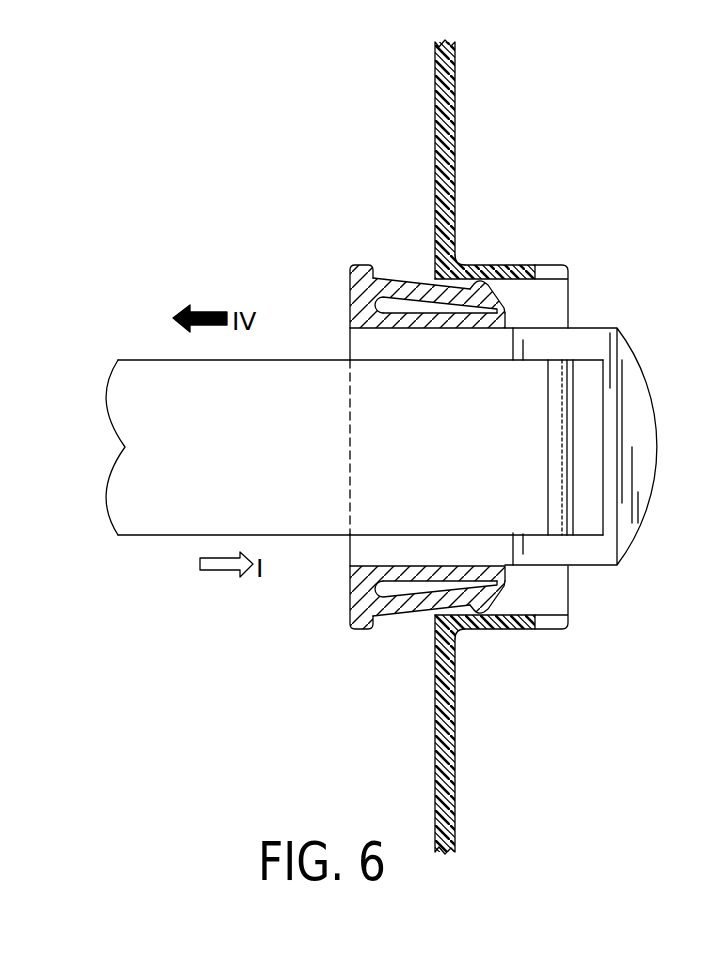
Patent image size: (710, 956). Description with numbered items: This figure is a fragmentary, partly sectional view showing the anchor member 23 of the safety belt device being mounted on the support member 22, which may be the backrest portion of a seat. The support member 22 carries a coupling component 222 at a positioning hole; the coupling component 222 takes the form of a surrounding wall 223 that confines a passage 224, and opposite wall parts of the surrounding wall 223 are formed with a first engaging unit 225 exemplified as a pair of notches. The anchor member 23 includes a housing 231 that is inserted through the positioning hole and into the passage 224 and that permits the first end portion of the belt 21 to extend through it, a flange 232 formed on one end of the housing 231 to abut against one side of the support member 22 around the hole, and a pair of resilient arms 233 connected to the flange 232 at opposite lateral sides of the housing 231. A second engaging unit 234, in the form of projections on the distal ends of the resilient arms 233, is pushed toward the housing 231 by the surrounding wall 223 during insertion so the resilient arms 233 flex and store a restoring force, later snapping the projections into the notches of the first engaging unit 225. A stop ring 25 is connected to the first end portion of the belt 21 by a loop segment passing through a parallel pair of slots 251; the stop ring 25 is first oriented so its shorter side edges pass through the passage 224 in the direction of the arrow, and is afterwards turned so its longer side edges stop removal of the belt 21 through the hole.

The belt 21 is at (155, 380).
The support member 22 is at (522, 447).
The coupling component 222 is at (499, 258).
The surrounding wall 223 is at (470, 266).
The passage 224 is at (522, 594).
The first engaging unit 225 is at (560, 268).
The anchor member 23 is at (422, 421).
The housing 231 is at (415, 575).
The flange 232 is at (352, 603).
The resilient arms 233 is at (418, 290).
The second engaging unit 234 is at (478, 283).
The stop ring 25 is at (604, 421).
The slots 251 is at (587, 375).